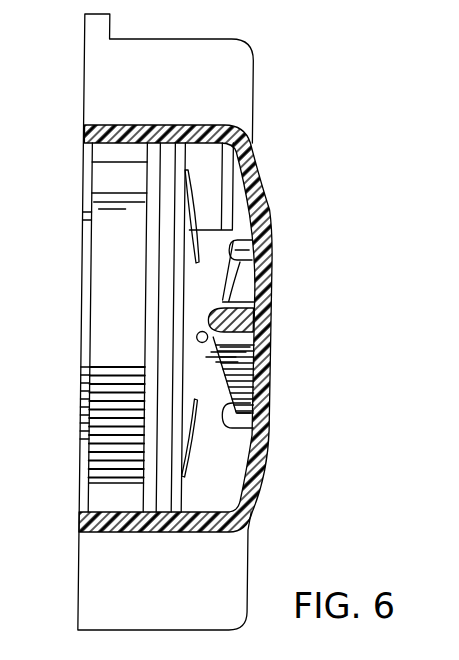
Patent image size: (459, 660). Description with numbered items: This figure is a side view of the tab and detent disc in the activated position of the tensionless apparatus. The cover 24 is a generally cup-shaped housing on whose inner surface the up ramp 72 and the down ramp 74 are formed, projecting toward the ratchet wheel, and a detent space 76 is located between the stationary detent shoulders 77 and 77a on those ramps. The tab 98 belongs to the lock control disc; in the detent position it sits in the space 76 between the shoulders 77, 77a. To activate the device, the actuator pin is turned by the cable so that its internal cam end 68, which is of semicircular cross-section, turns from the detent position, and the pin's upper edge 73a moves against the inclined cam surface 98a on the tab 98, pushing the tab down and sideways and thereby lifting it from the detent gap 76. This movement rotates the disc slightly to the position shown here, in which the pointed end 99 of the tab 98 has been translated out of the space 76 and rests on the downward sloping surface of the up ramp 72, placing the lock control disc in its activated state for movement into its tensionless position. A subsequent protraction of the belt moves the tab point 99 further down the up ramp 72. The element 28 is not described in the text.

The cover 24 is at (258, 43).
The housing 28 is at (253, 89).
The down ramp 74 is at (236, 238).
The detent shoulder 77a is at (270, 260).
The internal cam end 68 is at (254, 313).
The detent space 76 is at (255, 333).
The detent shoulder 77 is at (255, 360).
The up ramp 72 is at (255, 428).
The upper edge 73a is at (186, 333).
The tab 98 is at (188, 332).
The inclined cam surface 98a is at (215, 350).
The pointed end 99 is at (205, 347).